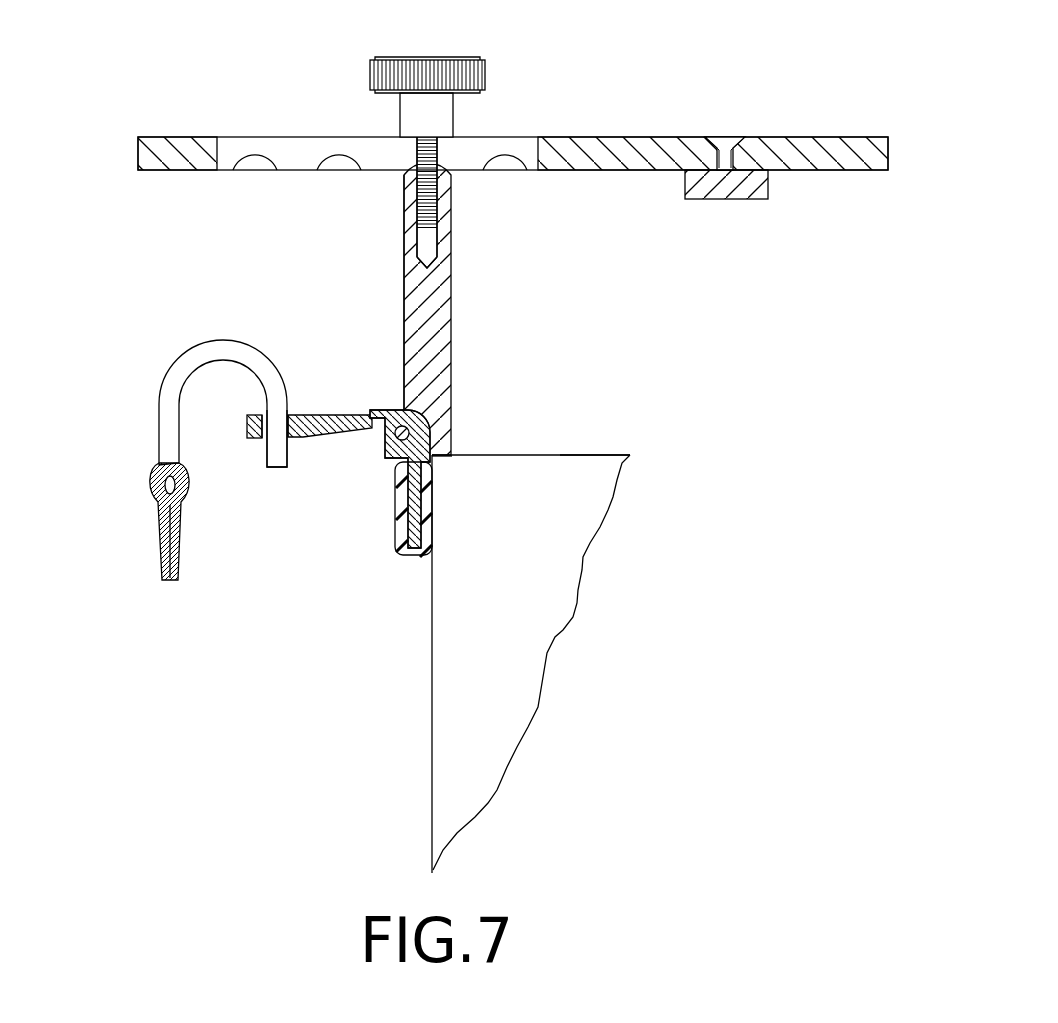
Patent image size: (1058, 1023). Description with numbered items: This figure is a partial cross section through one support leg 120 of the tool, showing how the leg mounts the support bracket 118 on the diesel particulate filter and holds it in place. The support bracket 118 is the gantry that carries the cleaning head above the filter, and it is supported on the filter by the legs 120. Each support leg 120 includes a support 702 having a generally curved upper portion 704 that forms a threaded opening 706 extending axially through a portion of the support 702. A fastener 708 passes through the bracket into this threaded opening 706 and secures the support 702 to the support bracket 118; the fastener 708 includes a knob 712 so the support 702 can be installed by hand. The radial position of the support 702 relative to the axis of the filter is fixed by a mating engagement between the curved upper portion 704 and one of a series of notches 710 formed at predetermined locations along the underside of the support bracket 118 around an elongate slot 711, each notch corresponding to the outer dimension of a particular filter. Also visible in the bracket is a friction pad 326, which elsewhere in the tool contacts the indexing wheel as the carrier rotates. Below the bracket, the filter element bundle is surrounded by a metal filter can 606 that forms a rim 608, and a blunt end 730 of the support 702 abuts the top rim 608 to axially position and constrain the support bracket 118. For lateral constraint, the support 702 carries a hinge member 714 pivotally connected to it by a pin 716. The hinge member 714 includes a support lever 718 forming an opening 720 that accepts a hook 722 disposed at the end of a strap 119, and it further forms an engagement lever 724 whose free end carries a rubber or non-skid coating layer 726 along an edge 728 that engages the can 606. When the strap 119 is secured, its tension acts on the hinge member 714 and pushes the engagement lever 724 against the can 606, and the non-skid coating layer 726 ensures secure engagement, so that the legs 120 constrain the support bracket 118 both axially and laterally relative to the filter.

The support bracket 118 is at (593, 153).
The strap 119 is at (160, 530).
The support leg 120 is at (435, 355).
The friction pad 326 is at (722, 183).
The filter can 606 is at (542, 482).
The rim 608 is at (599, 457).
The support 702 is at (427, 287).
The curved upper portion 704 is at (407, 170).
The threaded opening 706 is at (427, 243).
The fastener 708 is at (423, 193).
The notch 710 is at (506, 155).
The elongate slot 711 is at (503, 148).
The knob 712 is at (440, 113).
The hinge member 714 is at (340, 417).
The pin 716 is at (378, 430).
The support lever 718 is at (317, 442).
The opening 720 is at (293, 423).
The hook 722 is at (210, 357).
The engagement lever 724 is at (410, 513).
The non-skid coating layer 726 is at (407, 548).
The edge 728 is at (435, 518).
The blunt end 730 is at (443, 456).